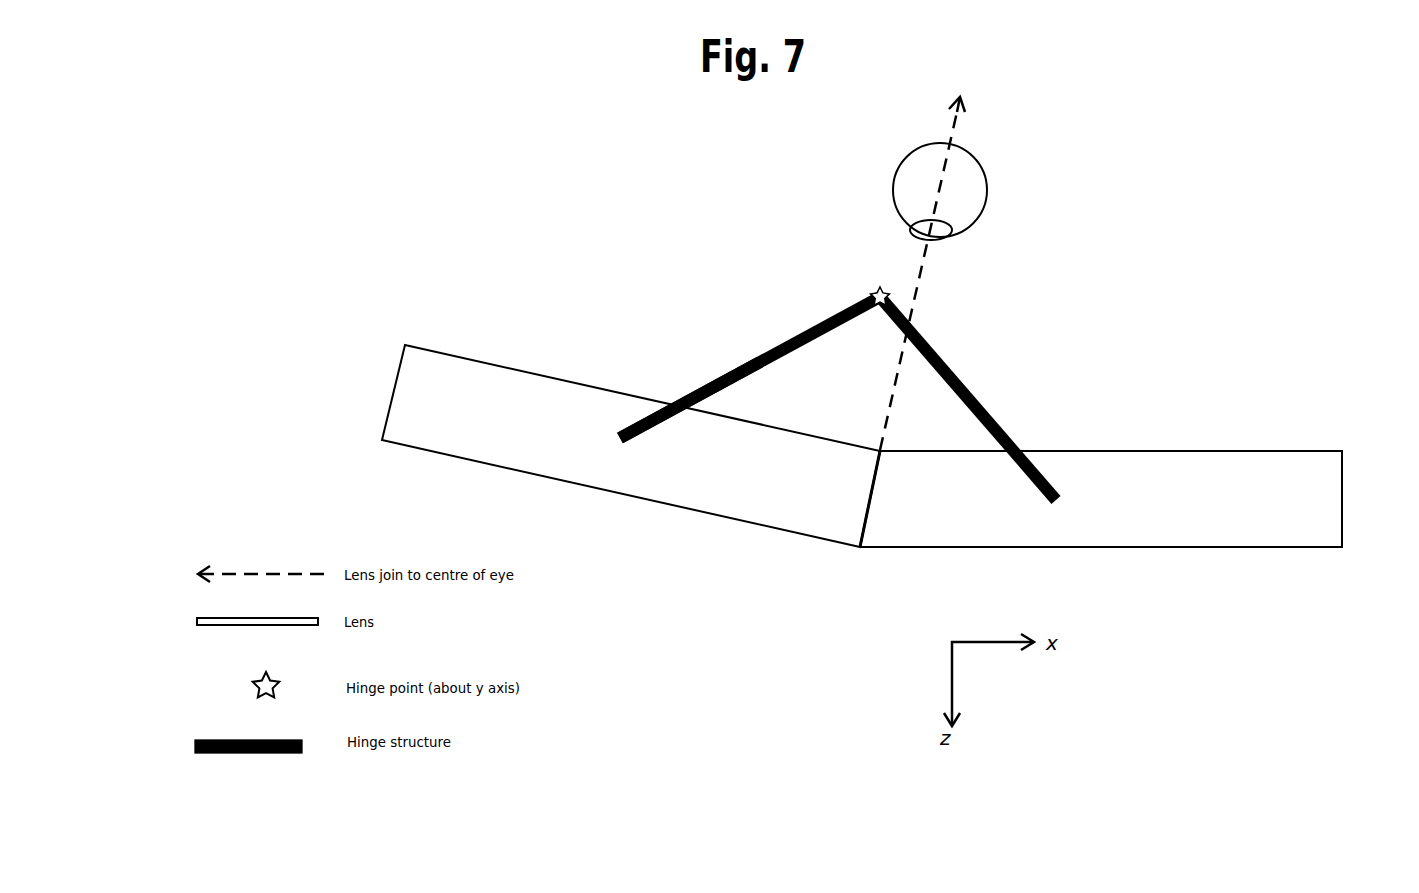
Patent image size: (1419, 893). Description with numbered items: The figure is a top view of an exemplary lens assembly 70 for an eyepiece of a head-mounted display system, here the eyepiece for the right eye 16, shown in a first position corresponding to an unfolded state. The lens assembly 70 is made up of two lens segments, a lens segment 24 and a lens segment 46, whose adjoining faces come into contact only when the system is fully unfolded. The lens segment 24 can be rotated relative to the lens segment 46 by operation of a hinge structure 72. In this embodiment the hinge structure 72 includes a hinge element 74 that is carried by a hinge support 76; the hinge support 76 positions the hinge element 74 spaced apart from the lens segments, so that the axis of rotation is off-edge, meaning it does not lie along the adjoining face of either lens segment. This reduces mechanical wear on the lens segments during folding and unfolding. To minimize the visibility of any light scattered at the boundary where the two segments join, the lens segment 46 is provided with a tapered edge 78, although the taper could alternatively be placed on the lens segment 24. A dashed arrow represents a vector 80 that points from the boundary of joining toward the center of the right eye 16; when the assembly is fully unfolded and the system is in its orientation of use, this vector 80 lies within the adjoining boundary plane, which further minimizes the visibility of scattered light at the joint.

The right eye 16 is at (988, 190).
The lens segment 24 is at (497, 367).
The lens segment 46 is at (1227, 455).
The lens assembly 70 is at (1028, 312).
The hinge structure 72 is at (825, 275).
The hinge element 74 is at (878, 290).
The hinge support 76 is at (700, 387).
The tapered edge 78 is at (860, 518).
The vector 80 is at (957, 127).